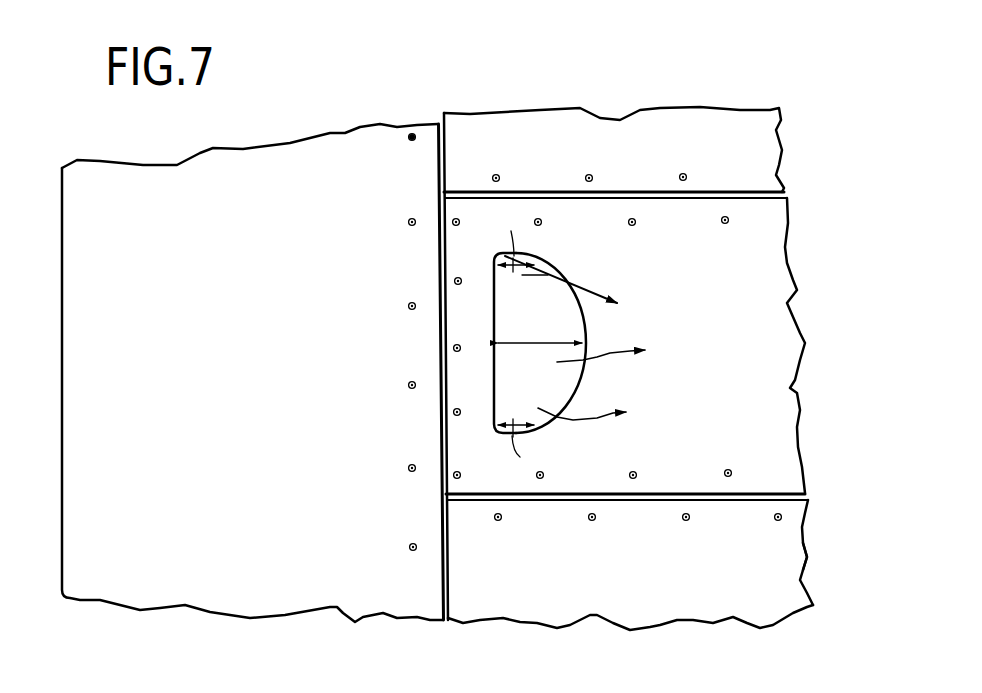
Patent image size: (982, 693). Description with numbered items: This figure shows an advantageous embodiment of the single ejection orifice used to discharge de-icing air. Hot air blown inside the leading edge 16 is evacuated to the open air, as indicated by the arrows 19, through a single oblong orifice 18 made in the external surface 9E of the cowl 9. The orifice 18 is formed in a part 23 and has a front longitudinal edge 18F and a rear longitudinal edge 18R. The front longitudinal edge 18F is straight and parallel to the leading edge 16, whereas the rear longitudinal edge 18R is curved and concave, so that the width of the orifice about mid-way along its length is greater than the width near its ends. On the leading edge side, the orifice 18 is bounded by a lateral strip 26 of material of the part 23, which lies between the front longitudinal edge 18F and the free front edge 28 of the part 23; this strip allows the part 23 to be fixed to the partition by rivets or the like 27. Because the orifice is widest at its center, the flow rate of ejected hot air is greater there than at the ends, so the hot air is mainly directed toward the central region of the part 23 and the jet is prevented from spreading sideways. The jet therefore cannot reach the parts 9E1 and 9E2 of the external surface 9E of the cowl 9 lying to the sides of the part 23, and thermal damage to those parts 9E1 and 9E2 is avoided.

The leading edge 16 is at (50, 228).
The cowl 9 is at (667, 385).
The external surface of the cowl 9E is at (768, 578).
The part of the external surface 9E1 is at (774, 129).
The part of the external surface 9E2 is at (795, 615).
The part 23 is at (787, 261).
The single oblong orifice 18 is at (506, 338).
The front longitudinal edge 18F is at (493, 388).
The rear longitudinal edge 18R is at (585, 379).
The arrows 19 is at (595, 290).
The lateral strip 26 is at (467, 303).
The rivets 27 is at (454, 281).
The free front edge 28 is at (443, 460).